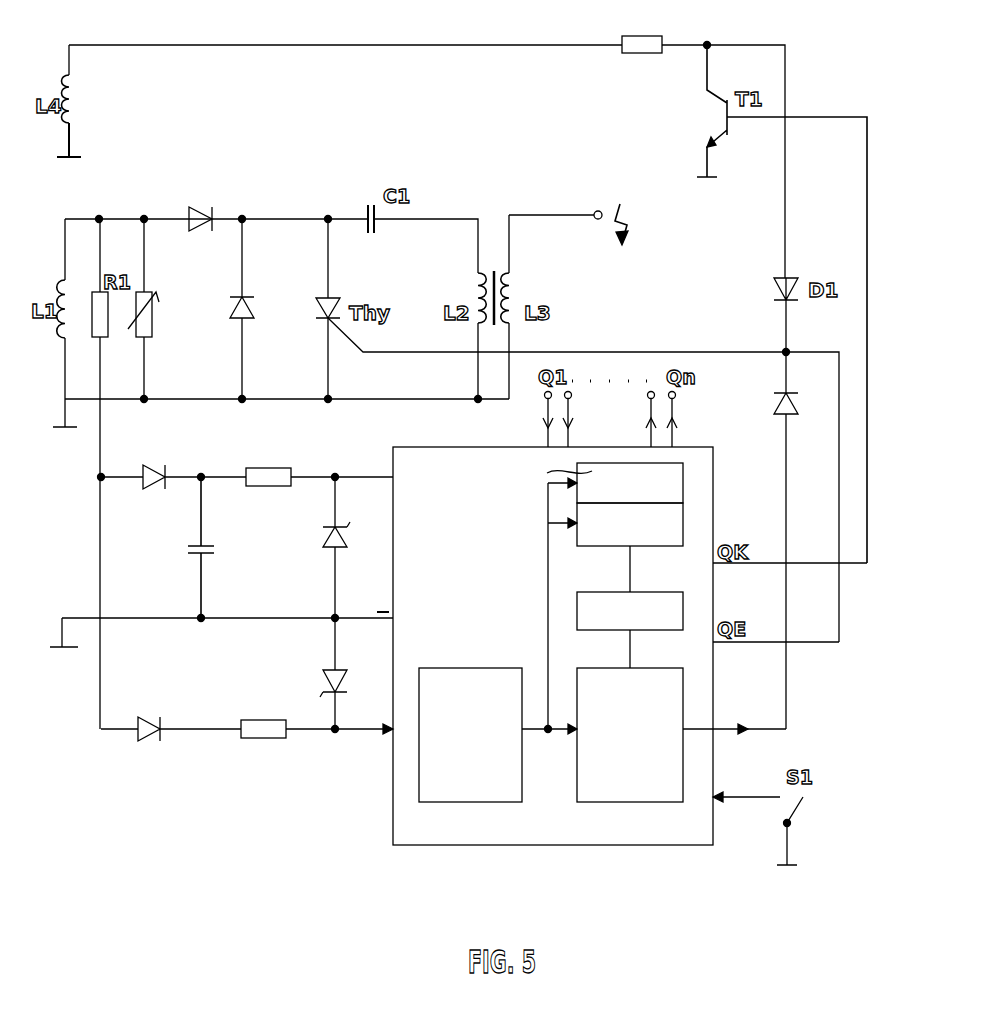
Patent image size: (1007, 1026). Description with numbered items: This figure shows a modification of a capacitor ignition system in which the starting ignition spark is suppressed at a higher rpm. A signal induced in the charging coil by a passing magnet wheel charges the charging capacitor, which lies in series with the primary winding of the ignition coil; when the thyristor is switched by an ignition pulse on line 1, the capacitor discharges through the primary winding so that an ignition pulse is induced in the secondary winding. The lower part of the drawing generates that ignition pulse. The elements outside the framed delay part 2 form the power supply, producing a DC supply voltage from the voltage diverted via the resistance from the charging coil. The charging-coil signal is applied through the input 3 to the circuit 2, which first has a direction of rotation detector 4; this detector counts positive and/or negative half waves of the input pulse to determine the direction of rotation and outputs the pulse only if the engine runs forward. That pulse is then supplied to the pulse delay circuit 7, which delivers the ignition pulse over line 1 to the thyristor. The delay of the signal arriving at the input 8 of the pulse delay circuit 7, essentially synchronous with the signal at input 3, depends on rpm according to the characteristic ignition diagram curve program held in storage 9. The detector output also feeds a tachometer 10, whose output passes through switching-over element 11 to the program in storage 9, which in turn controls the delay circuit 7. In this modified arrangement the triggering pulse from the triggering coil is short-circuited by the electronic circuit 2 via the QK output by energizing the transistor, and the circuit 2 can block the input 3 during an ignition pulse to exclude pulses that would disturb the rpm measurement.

The line 1 is at (659, 348).
The framed delay part 2 is at (393, 806).
The input 3 is at (373, 735).
The direction of rotation detector 4 is at (446, 790).
The pulse delay circuit 7 is at (622, 787).
The input of the pulse delay circuit 8 is at (568, 736).
The storage 9 is at (673, 615).
The tachometer 10 is at (673, 495).
The switching-over element 11 is at (673, 530).